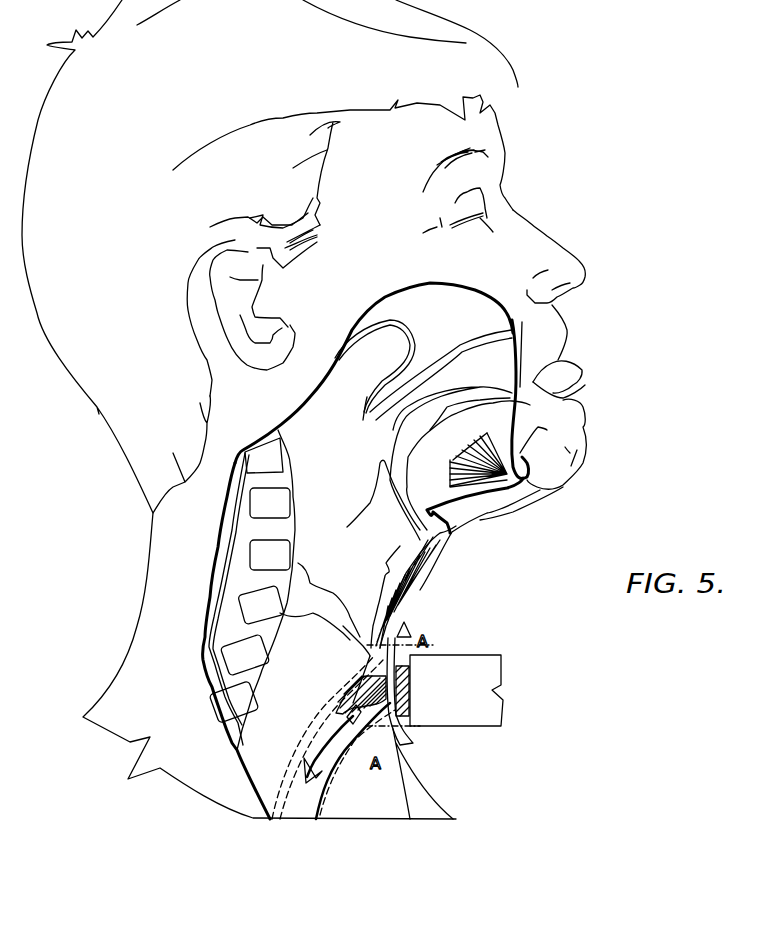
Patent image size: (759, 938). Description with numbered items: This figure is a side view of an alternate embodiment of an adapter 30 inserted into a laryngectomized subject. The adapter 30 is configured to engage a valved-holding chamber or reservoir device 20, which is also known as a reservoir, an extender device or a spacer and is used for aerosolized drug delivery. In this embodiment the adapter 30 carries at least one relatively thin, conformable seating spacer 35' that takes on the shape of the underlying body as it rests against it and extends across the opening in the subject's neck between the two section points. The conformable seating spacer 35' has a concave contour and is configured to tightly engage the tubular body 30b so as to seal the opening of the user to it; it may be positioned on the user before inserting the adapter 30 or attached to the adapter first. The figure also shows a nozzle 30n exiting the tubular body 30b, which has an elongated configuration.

The conformable seating spacer 35' is at (435, 658).
The valved-holding chamber or reservoir device 20 is at (412, 655).
The nozzle 30n is at (353, 691).
The adapter 30 is at (386, 704).
The tubular body 30b is at (386, 736).